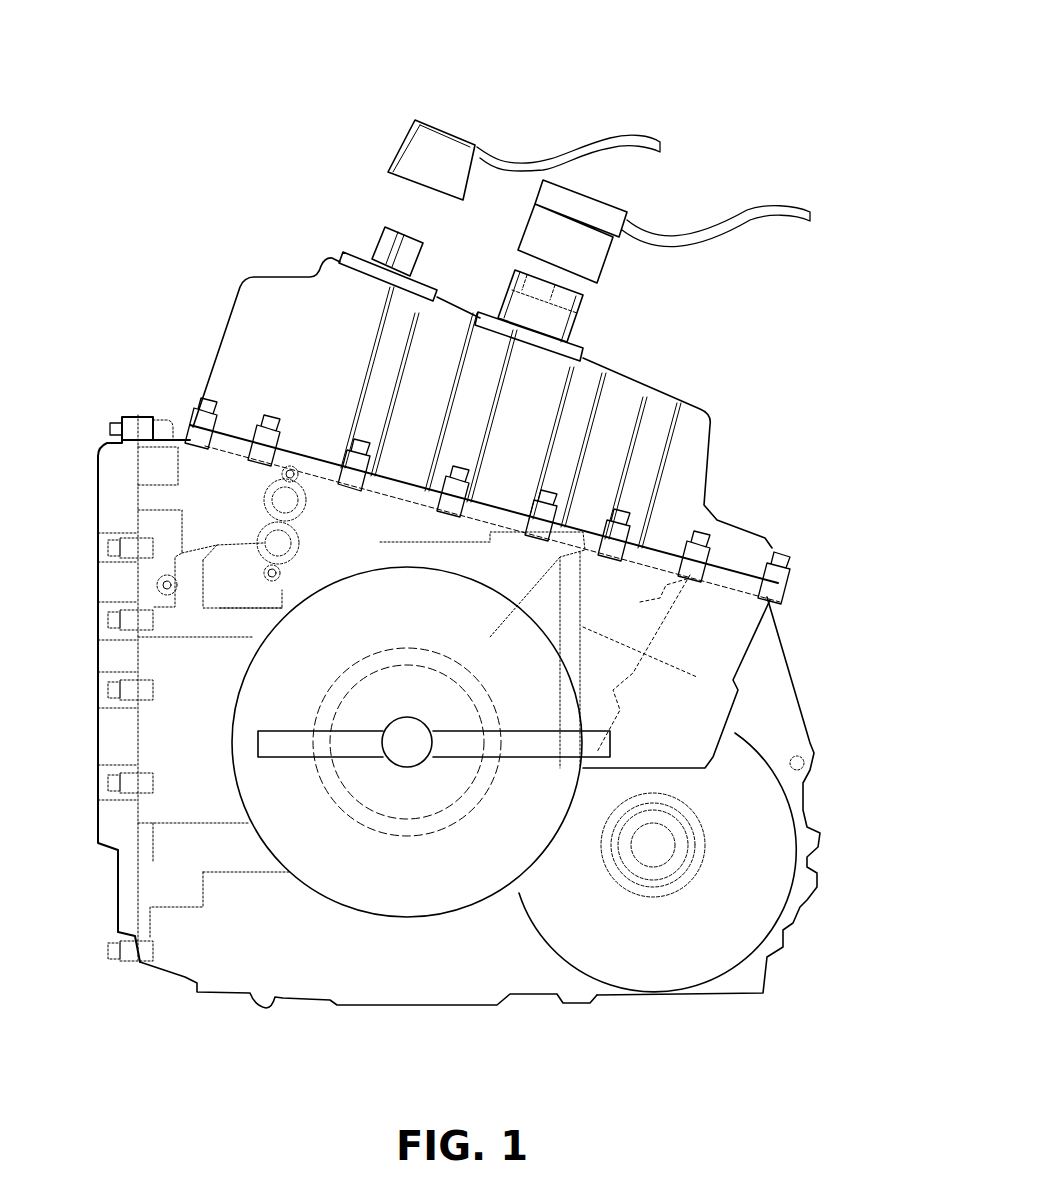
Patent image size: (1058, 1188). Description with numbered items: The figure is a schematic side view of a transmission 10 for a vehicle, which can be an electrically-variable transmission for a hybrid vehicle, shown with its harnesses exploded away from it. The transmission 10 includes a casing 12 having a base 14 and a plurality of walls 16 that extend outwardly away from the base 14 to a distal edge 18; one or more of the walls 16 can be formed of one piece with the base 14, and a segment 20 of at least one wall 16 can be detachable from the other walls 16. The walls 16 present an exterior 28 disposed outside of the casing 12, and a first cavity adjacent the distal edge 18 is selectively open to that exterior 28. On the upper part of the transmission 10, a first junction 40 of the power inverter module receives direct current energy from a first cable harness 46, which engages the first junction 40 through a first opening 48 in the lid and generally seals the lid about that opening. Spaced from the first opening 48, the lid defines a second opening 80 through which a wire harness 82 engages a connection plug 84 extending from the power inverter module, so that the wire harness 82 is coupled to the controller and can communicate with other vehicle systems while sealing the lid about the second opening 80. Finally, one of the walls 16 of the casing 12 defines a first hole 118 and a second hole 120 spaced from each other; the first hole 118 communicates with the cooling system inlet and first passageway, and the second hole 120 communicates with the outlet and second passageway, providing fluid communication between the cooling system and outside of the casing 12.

The transmission 10 is at (699, 100).
The casing 12 is at (783, 708).
The base 14 is at (423, 1007).
The walls 16 is at (193, 437).
The distal edge 18 is at (790, 580).
The segment 20 is at (120, 665).
The exterior 28 is at (505, 965).
The first junction 40 is at (380, 235).
The first cable harness 46 is at (443, 148).
The first opening 48 is at (357, 256).
The second opening 80 is at (585, 342).
The wire harness 82 is at (600, 218).
The connection plug 84 is at (560, 312).
The first hole 118 is at (287, 500).
The second hole 120 is at (272, 543).